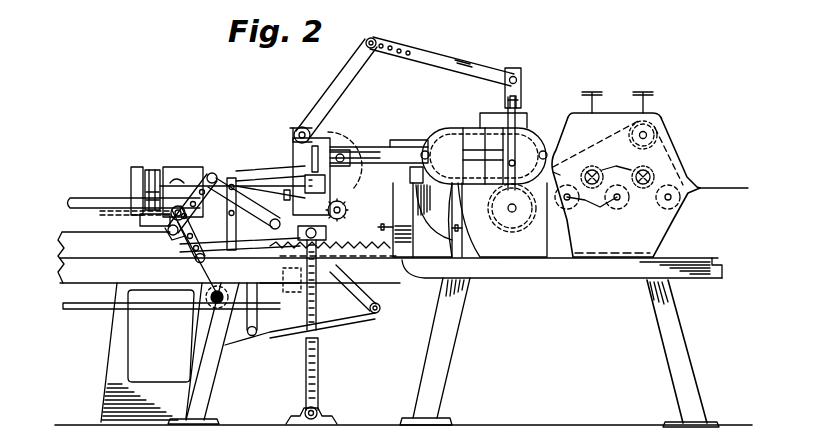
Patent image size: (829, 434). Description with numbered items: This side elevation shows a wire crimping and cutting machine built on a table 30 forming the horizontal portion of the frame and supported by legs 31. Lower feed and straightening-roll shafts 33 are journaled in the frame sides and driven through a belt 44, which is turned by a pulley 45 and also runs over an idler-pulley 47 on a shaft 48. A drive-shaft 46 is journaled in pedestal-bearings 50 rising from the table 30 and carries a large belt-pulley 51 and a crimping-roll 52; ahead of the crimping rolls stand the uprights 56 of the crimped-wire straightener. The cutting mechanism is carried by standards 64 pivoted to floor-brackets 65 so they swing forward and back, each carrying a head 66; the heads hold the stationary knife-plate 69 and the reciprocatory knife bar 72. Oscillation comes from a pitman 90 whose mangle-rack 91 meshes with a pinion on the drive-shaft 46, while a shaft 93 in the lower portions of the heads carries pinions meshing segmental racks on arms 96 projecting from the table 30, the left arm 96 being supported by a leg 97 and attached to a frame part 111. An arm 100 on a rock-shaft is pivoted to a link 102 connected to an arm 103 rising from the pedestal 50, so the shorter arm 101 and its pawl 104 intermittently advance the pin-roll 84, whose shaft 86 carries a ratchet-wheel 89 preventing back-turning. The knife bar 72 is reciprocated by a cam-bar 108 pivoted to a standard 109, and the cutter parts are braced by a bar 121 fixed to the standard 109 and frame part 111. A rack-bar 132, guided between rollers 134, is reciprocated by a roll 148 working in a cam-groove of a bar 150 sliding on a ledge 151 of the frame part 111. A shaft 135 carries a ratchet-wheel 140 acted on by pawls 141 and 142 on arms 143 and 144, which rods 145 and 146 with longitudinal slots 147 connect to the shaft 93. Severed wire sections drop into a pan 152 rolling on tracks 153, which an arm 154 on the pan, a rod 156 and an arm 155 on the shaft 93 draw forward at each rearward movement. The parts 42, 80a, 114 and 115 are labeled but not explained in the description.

The table 30 is at (577, 268).
The legs 31 is at (442, 350).
The lower feed and straightening-roll shafts 33 is at (575, 200).
The pedestal housing 42 is at (499, 220).
The belt 44 is at (578, 150).
The pulley 45 is at (498, 236).
The drive-shaft 46 is at (522, 130).
The idler-pulley 47 is at (656, 138).
The shaft 48 is at (646, 133).
The pedestal-bearings 50 is at (488, 114).
The large belt-pulley 51 is at (667, 338).
The crimping-roll 52 is at (650, 174).
The uprights 56 is at (415, 212).
The standards 64 is at (320, 356).
The floor-brackets 65 is at (320, 413).
The head 66 is at (318, 146).
The stationary knife-plate 69 is at (326, 234).
The longitudinally reciprocatory bar 72 is at (300, 160).
The gear hub 80a is at (342, 200).
The roll 84 is at (514, 212).
The shaft 86 is at (347, 211).
The ratchet-wheel 89 is at (346, 206).
The pitman 90 is at (400, 148).
The mangle-rack 91 is at (450, 130).
The shaft 93 is at (290, 272).
The arms 96 is at (222, 290).
The leg 97 is at (214, 352).
The arm 100 is at (340, 92).
The arm 101 is at (318, 130).
The link 102 is at (420, 57).
The arm 103 is at (522, 87).
The pawl 104 is at (350, 146).
The cam-bar 108 is at (275, 168).
The standard 109 is at (435, 220).
The frame part 111 is at (188, 168).
The rod 114 is at (275, 165).
The slide 115 is at (319, 171).
The bar 121 is at (292, 192).
The rack-bar 132 is at (131, 190).
The rollers 134 is at (153, 170).
The shaft 135 is at (170, 240).
The ratchet-wheel 140 is at (170, 220).
The pawl 141 is at (177, 181).
The pawl 142 is at (200, 244).
The arm 143 is at (213, 176).
The arm 144 is at (188, 255).
The rod 145 is at (244, 205).
The rod 146 is at (205, 270).
The longitudinal slots 147 is at (330, 249).
The roll 148 is at (140, 213).
The bar 150 is at (92, 208).
The ledge 151 is at (144, 225).
The trough or pan 152 is at (60, 262).
The supporting-tracks 153 is at (72, 311).
The arm 154 is at (258, 336).
The arm 155 is at (360, 291).
The rod 156 is at (340, 320).